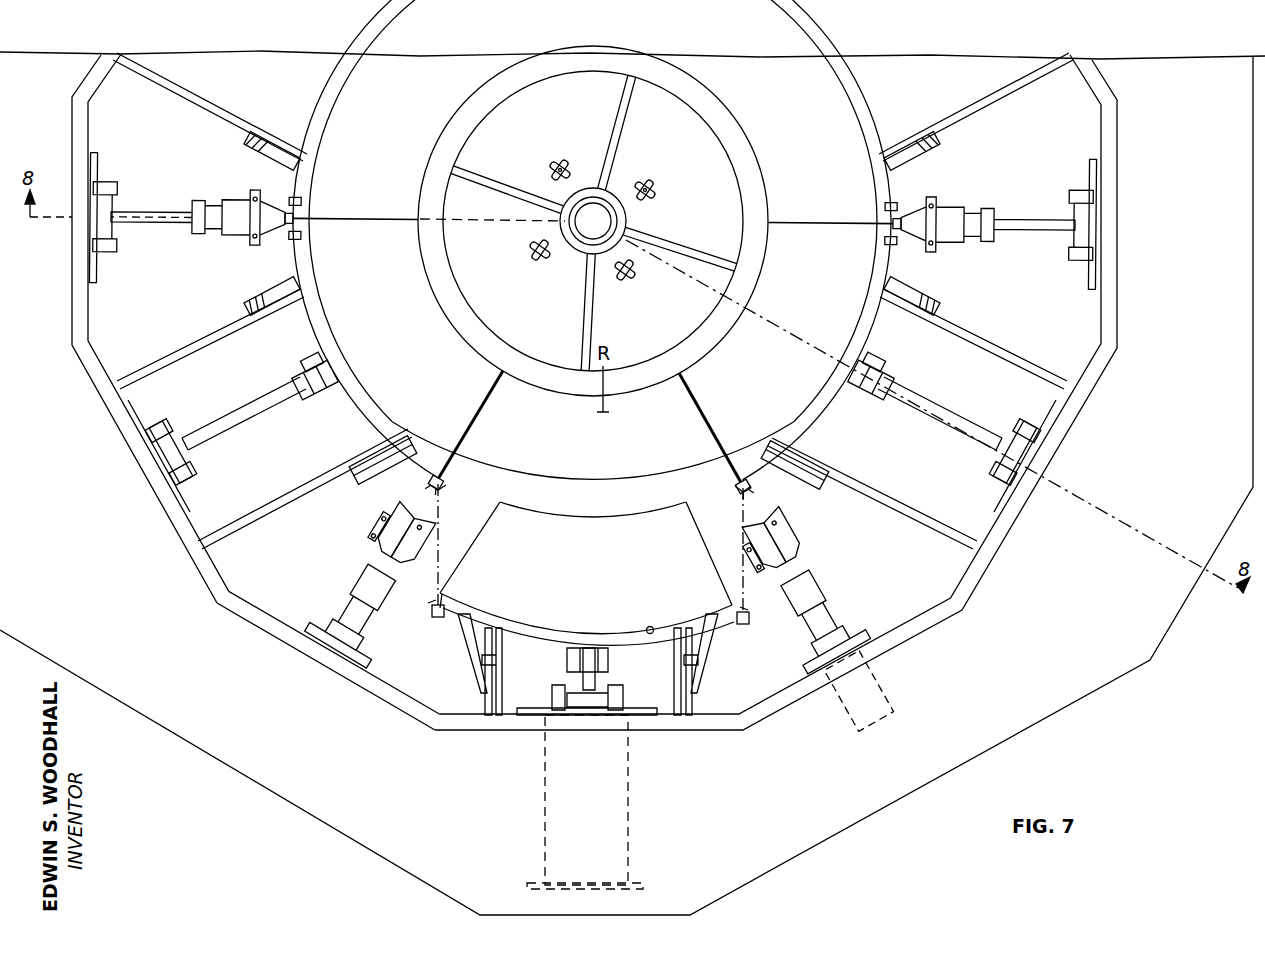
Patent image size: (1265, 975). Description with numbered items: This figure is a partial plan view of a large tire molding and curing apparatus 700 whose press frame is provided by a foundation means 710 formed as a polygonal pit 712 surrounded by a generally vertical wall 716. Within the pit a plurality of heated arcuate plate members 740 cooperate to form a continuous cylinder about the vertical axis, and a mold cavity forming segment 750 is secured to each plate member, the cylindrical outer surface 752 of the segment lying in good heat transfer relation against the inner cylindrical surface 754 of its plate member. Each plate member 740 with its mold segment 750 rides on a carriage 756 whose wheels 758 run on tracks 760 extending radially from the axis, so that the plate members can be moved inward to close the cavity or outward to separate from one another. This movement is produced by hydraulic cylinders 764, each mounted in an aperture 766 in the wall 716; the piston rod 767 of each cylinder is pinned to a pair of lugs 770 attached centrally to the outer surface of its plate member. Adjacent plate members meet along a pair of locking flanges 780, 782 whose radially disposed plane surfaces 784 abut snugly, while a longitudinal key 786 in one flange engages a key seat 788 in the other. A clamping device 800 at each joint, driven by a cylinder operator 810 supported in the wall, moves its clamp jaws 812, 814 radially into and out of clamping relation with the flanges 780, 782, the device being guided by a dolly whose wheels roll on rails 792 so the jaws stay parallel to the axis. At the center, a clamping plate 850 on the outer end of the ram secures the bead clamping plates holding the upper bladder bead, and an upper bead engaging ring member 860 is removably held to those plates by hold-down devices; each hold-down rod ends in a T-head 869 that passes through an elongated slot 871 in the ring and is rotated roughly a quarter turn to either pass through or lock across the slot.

The apparatus 700 is at (1085, 696).
The foundation means 710 is at (851, 828).
The polygonal pit 712 is at (105, 318).
The vertical wall 716 is at (262, 571).
The arcuate plate member 740 is at (312, 120).
The mold cavity forming segment 750 is at (600, 537).
The cylindrical outer surface 752 is at (650, 626).
The inner cylindrical surface 754 is at (565, 630).
The carriage 756 is at (935, 300).
The wheels 758 is at (235, 338).
The tracks 760 is at (170, 82).
The hydraulic cylinder 764 is at (190, 463).
The aperture 766 is at (545, 798).
The piston rod 767 is at (238, 412).
The lugs 770 is at (870, 366).
The locking flange 780 is at (755, 485).
The locking flange 782 is at (428, 484).
The plane surface 784 is at (378, 219).
The longitudinal key 786 is at (893, 222).
The key seat 788 is at (446, 483).
The rails 792 is at (430, 505).
The clamping device 800 is at (238, 210).
The cylinder operator 810 is at (110, 205).
The clamp jaw 812 is at (295, 232).
The clamp jaw 814 is at (294, 205).
The clamping plate 850 is at (565, 230).
The bead engaging ring member 860 is at (465, 280).
The T-head 869 is at (566, 166).
The elongated slot 871 is at (555, 167).